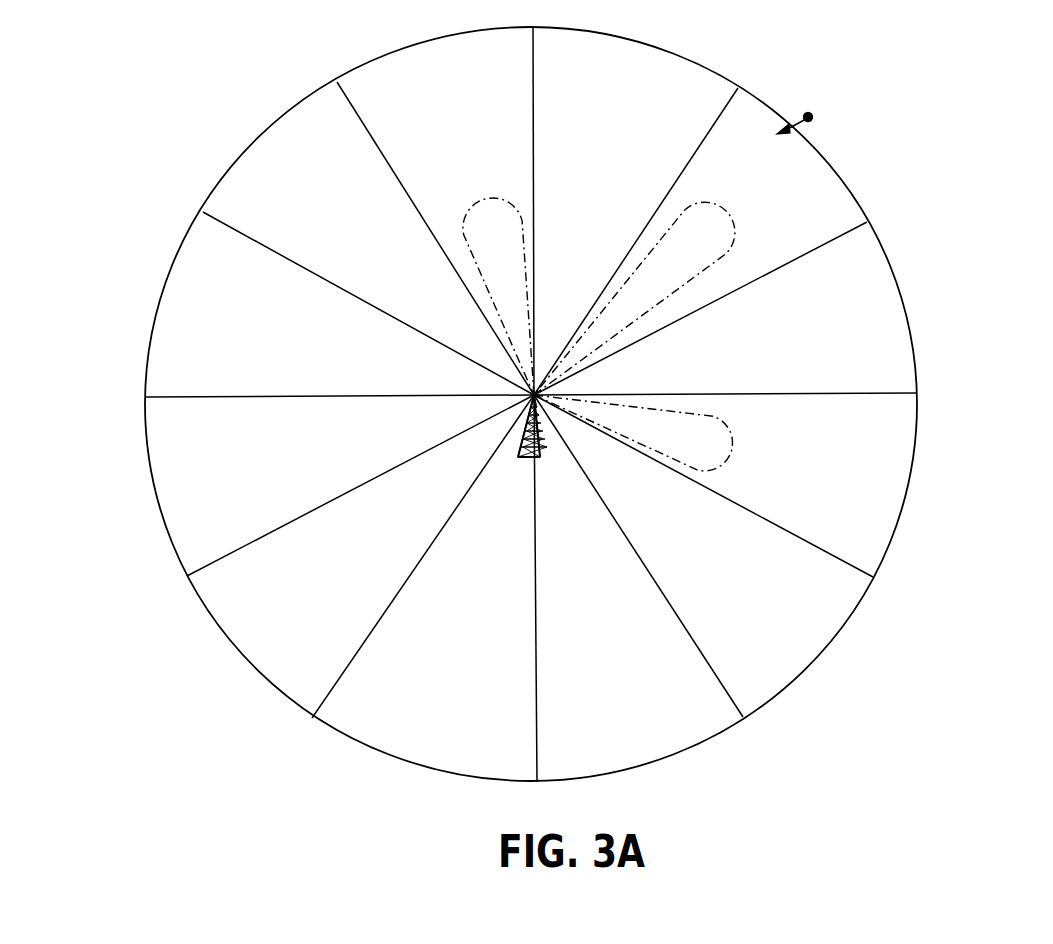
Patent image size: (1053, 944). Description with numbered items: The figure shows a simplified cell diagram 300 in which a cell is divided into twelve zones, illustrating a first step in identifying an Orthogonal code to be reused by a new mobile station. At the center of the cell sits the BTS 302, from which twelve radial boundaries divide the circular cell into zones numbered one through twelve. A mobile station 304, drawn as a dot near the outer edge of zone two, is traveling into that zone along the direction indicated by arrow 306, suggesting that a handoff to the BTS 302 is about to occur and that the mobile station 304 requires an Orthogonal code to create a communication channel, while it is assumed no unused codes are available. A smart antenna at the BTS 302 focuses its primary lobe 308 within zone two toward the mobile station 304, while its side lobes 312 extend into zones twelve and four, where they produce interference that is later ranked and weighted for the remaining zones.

The cellular coverage area divided into zones 300 is at (948, 178).
The BTS 302 is at (532, 460).
The mobile station 304 is at (811, 110).
The direction of movement of mobile station 306 is at (795, 121).
The primary lobe 308 is at (734, 240).
The side lobes 312 is at (495, 201).